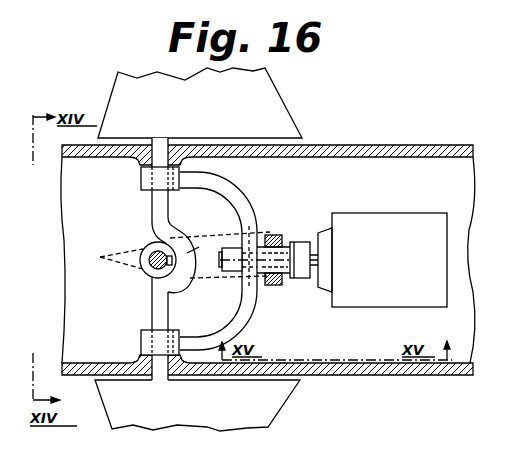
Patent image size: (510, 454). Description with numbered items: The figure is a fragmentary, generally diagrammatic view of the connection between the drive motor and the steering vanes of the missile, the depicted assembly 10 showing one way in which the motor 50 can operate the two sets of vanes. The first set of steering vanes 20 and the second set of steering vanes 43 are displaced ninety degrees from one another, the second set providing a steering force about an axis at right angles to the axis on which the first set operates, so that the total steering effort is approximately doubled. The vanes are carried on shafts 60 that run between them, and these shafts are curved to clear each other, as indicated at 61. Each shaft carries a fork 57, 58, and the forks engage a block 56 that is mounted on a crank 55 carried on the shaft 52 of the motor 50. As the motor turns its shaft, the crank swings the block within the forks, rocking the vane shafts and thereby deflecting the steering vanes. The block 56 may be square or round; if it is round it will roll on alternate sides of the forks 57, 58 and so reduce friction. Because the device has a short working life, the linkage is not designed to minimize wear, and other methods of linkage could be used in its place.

The housing 10 is at (407, 144).
The steering vanes 20 is at (127, 250).
The steering vanes 43 is at (268, 100).
The motor 50 is at (400, 221).
The shaft 52 is at (315, 259).
The crank 55 is at (212, 262).
The block 56 is at (275, 286).
The fork 57 is at (239, 191).
The fork 58 is at (218, 234).
The shafts 60 is at (160, 262).
The curved portion of shaft 61 is at (202, 252).